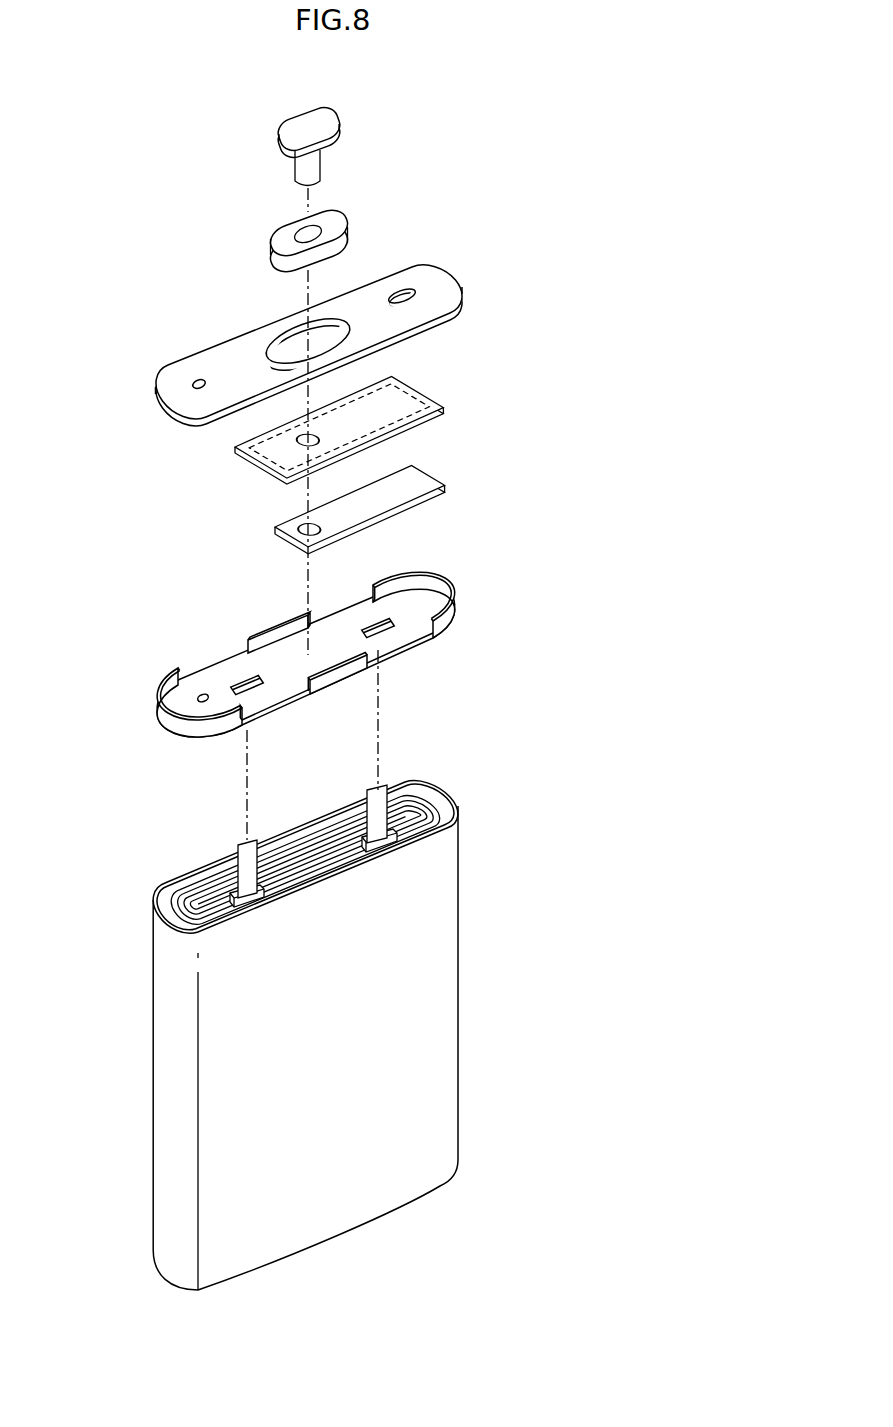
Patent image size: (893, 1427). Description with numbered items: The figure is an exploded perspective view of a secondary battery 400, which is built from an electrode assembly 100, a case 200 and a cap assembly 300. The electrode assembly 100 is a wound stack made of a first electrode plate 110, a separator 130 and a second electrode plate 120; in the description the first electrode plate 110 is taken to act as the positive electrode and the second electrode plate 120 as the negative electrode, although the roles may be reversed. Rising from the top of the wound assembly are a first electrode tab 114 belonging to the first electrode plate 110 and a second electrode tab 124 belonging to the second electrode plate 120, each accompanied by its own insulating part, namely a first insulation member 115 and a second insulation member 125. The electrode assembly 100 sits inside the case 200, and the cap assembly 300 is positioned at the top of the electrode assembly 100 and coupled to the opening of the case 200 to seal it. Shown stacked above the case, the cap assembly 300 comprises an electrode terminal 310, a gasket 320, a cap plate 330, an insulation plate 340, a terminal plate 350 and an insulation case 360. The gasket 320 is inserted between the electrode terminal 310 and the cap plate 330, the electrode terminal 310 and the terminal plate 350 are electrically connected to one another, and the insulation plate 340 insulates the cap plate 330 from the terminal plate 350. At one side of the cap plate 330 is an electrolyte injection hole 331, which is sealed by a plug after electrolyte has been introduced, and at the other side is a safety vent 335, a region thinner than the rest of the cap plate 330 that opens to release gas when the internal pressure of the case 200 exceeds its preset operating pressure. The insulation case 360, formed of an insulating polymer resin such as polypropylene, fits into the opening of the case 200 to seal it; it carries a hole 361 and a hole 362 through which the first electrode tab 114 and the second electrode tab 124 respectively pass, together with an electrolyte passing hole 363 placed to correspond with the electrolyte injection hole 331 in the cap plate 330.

The secondary battery 400 is at (104, 110).
The electrode assembly 100 is at (178, 899).
The first electrode plate 110 is at (459, 800).
The first electrode tab 114 is at (376, 800).
The first insulation member 115 is at (360, 838).
The second electrode plate 120 is at (405, 815).
The second electrode tab 124 is at (250, 866).
The second insulation member 125 is at (232, 897).
The separator 130 is at (424, 815).
The case 200 is at (466, 987).
The cap assembly 300 is at (540, 147).
The electrode terminal 310 is at (335, 123).
The gasket 320 is at (285, 232).
The cap plate 330 is at (447, 283).
The electrolyte injection hole 331 is at (195, 380).
The safety vent 335 is at (400, 291).
The insulation plate 340 is at (425, 390).
The terminal plate 350 is at (423, 476).
The insulation case 360 is at (448, 585).
The hole 361 is at (375, 625).
The hole 362 is at (243, 682).
The electrolyte passing hole 363 is at (201, 694).